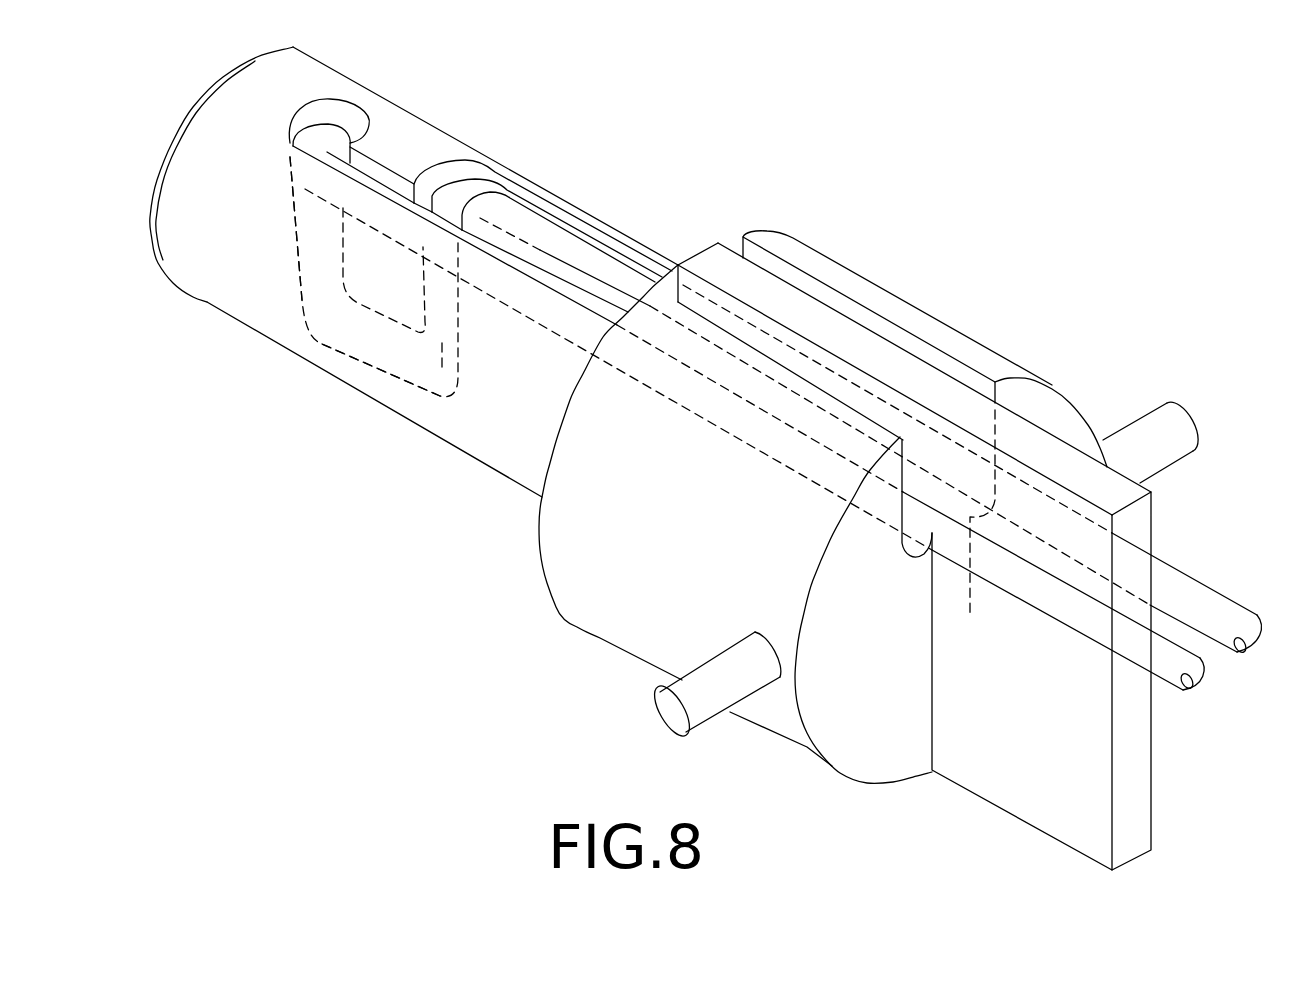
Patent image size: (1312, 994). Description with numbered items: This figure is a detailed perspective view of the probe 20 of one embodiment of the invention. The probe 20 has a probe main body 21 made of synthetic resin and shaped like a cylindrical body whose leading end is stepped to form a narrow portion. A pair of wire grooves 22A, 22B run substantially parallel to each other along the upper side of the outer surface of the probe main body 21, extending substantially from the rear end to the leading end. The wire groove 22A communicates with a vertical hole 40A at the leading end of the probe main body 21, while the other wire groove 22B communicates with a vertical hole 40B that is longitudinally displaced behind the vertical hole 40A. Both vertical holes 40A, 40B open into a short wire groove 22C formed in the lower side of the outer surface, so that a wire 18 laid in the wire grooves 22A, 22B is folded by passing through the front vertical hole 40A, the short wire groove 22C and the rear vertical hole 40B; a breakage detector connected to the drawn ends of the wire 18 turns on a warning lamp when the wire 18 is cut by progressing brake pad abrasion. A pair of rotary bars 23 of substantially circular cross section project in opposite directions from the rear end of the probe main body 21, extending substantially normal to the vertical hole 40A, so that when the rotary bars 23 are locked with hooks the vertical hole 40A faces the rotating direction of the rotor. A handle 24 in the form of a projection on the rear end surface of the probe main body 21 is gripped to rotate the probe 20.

The wire 18 is at (1212, 606).
The probe 20 is at (930, 284).
The probe main body 21 is at (460, 104).
The wire groove 22A is at (565, 312).
The wire groove 22B is at (541, 202).
The short wire groove 22C is at (313, 360).
The rotary bars 23 is at (1180, 424).
The handle 24 is at (1113, 777).
The vertical hole 40A is at (300, 270).
The vertical hole 40B is at (417, 420).